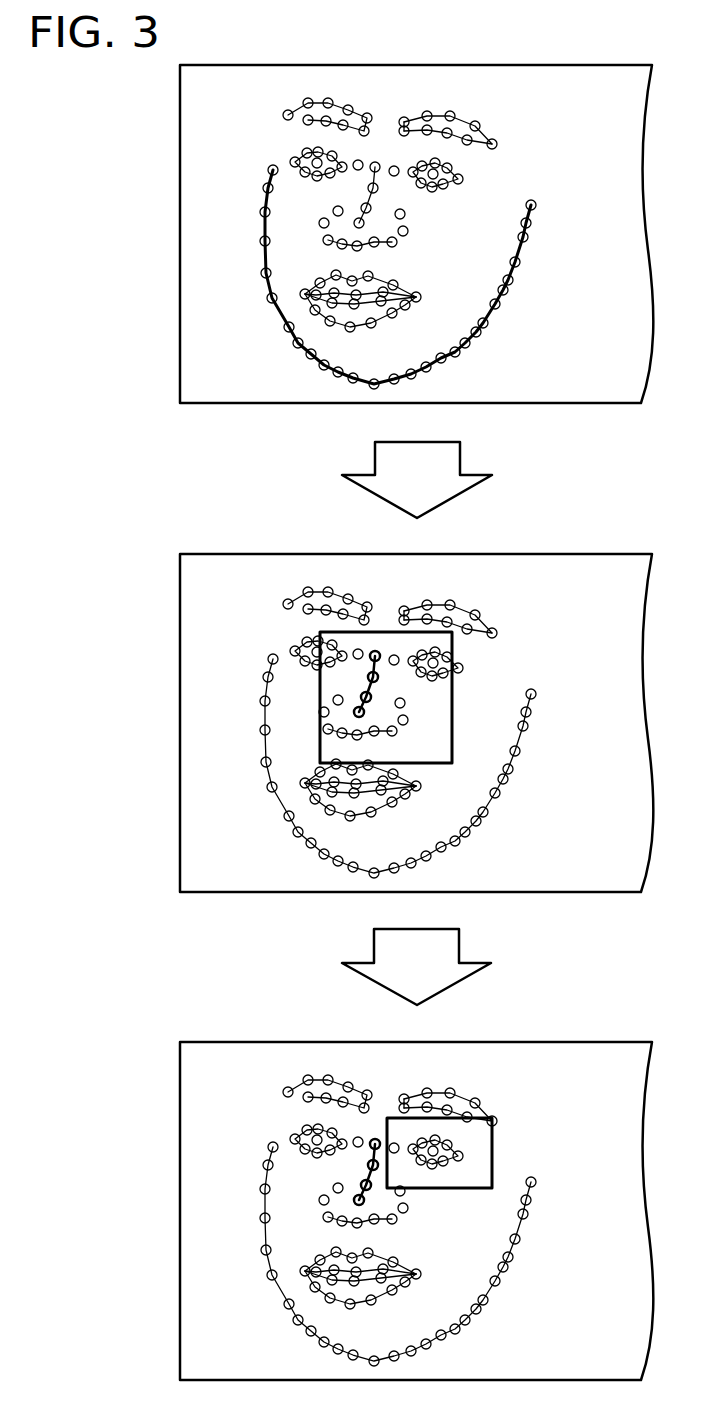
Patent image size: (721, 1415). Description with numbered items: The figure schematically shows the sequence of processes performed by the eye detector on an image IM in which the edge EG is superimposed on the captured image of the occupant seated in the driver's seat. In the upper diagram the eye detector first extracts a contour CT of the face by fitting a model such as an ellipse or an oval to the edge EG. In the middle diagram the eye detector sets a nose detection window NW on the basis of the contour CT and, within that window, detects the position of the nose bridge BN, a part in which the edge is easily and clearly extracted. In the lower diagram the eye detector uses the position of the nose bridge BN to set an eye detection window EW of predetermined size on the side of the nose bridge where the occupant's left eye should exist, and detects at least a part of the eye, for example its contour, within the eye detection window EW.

The image IM is at (180, 237).
The edge EG is at (497, 144).
The contour CT is at (519, 252).
The nose bridge BN is at (380, 686).
The nose detection window NW is at (453, 737).
The eye detection window EW is at (493, 1150).